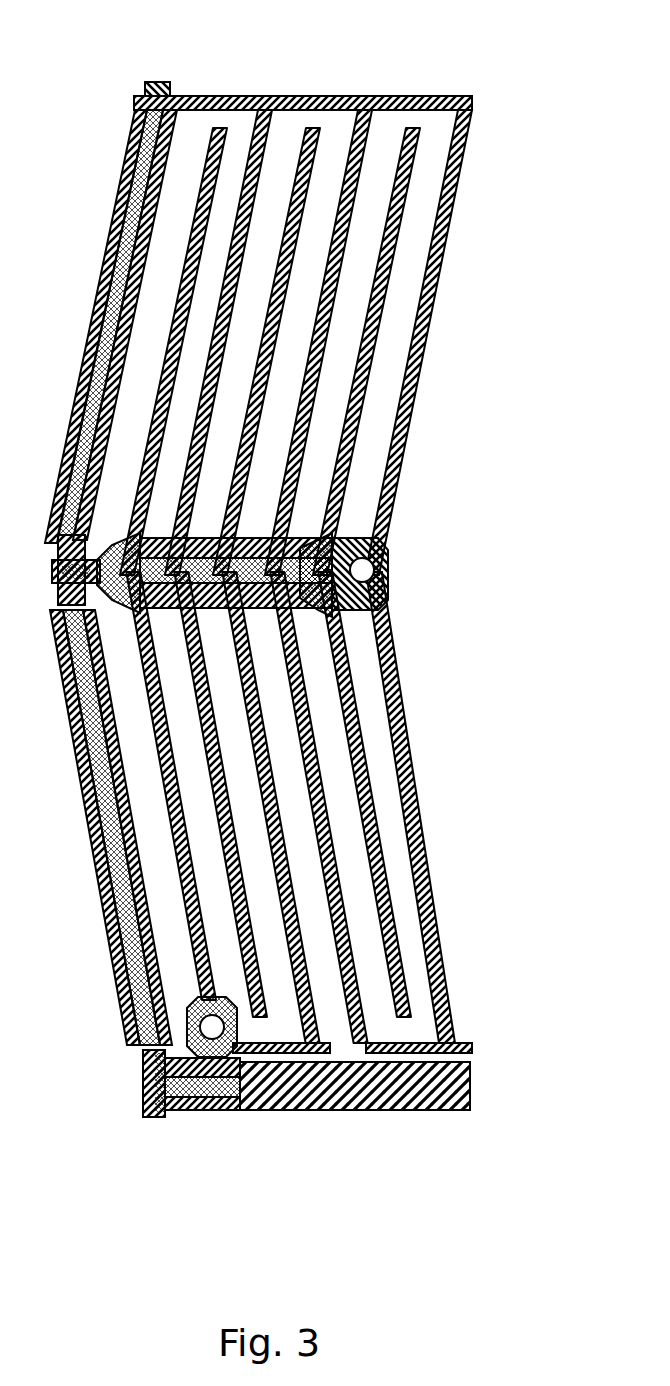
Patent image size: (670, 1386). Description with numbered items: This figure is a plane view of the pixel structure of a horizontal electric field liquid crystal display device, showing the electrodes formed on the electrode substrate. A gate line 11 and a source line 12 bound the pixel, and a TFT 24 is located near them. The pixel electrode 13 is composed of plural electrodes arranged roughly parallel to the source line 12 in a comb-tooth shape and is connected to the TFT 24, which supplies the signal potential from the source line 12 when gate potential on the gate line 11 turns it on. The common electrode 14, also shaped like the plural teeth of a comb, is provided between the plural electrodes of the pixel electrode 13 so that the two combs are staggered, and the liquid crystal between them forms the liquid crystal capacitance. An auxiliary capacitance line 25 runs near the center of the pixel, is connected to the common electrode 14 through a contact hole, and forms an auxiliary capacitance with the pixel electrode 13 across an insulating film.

The gate line 11 is at (419, 1110).
The source line 12 is at (152, 82).
The pixel electrode 13 is at (378, 96).
The common electrode 14 is at (398, 193).
The TFT 24 is at (229, 1115).
The auxiliary capacitance line 25 is at (352, 612).